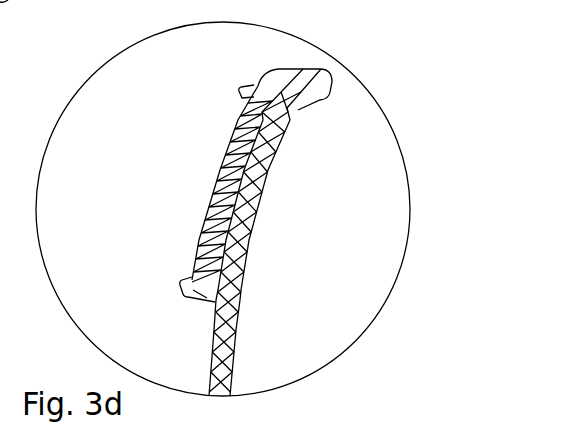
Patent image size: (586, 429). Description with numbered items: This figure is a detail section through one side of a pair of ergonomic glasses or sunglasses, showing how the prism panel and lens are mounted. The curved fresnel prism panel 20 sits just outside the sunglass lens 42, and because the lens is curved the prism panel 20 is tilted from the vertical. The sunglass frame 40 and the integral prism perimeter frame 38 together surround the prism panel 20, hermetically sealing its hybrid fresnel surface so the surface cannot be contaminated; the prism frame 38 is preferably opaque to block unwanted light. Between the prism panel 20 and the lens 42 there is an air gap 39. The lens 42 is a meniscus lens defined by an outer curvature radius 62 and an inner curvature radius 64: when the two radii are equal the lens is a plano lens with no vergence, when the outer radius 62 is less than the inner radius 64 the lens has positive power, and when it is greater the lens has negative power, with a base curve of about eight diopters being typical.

The curved fresnel prism panel 20 is at (213, 206).
The prism perimeter frame 38 is at (200, 295).
The air gap 39 is at (205, 263).
The sunglass frame 40 is at (308, 91).
The sunglass lens 42 is at (232, 266).
The outer curvature radius 62 is at (210, 367).
The inner curvature radius 64 is at (232, 357).